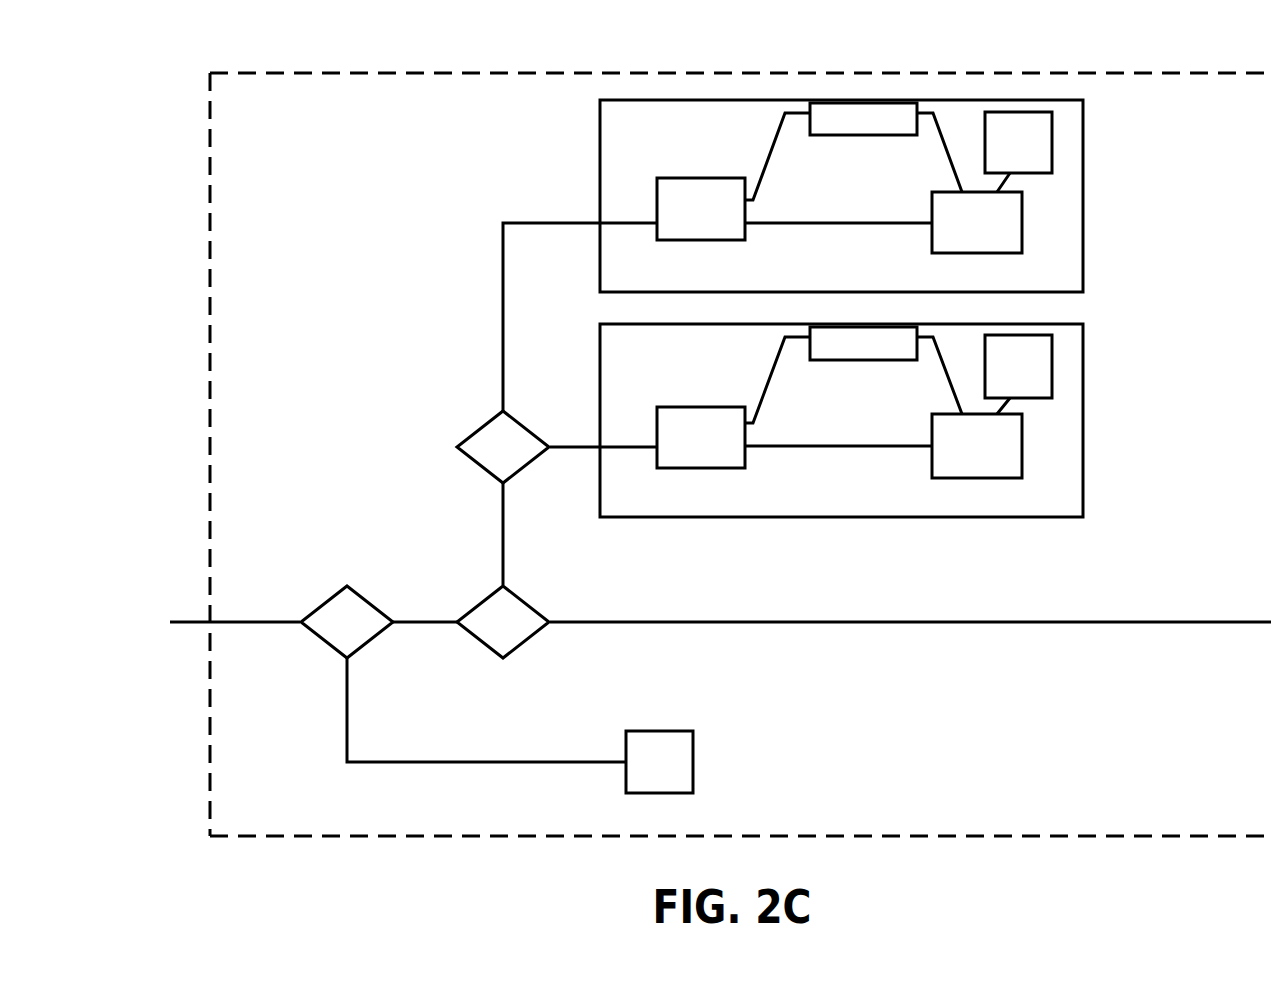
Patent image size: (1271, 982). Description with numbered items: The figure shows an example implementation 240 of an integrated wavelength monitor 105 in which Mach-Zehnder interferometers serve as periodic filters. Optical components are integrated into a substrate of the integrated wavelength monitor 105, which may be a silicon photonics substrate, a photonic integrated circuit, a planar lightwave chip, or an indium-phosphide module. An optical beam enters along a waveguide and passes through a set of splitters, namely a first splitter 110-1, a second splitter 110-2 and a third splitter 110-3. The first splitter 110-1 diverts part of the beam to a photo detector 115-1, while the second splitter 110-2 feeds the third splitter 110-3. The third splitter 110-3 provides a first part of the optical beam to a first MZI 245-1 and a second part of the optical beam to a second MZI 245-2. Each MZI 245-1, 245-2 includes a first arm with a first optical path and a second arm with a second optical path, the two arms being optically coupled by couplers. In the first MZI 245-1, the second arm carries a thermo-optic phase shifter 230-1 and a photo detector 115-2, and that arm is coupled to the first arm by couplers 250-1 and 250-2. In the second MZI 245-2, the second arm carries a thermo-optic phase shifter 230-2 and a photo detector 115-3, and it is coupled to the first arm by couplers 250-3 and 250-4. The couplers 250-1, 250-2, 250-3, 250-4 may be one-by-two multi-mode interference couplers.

The example implementation 240 is at (203, 24).
The integrated wavelength monitor 105 is at (740, 437).
The splitter 110-1 is at (318, 633).
The splitter 110-2 is at (474, 633).
The splitter 110-3 is at (475, 458).
The photo detector 115-1 is at (637, 761).
The photo detector 115-2 is at (996, 366).
The photo detector 115-3 is at (996, 141).
The Mach-Zehnder interferometer 245-1 is at (704, 356).
The Mach-Zehnder interferometer 245-2 is at (704, 132).
The thermo-optic phase shifter 230-1 is at (834, 356).
The thermo-optic phase shifter 230-2 is at (834, 132).
The coupler 250-1 is at (673, 449).
The coupler 250-2 is at (948, 460).
The coupler 250-3 is at (673, 222).
The coupler 250-4 is at (948, 237).